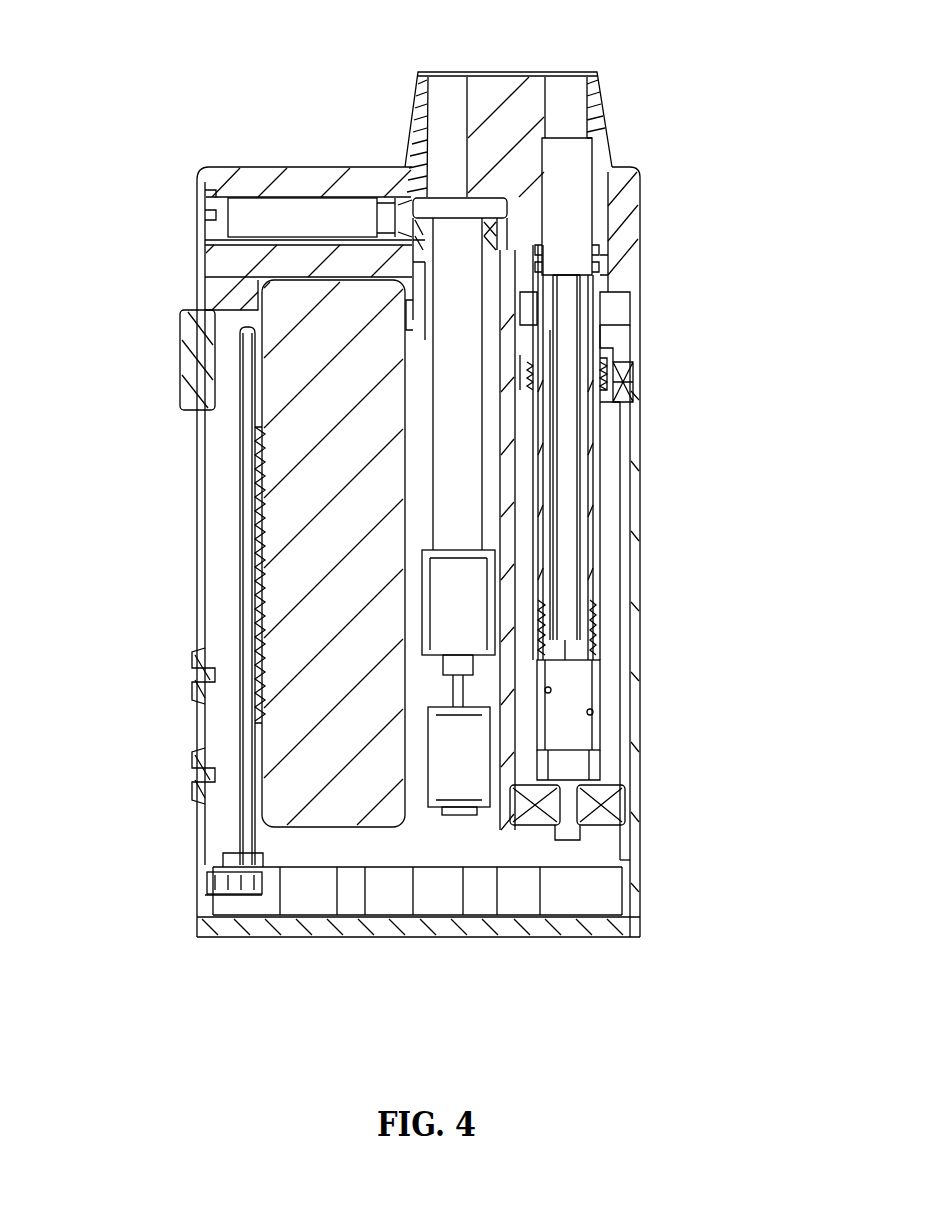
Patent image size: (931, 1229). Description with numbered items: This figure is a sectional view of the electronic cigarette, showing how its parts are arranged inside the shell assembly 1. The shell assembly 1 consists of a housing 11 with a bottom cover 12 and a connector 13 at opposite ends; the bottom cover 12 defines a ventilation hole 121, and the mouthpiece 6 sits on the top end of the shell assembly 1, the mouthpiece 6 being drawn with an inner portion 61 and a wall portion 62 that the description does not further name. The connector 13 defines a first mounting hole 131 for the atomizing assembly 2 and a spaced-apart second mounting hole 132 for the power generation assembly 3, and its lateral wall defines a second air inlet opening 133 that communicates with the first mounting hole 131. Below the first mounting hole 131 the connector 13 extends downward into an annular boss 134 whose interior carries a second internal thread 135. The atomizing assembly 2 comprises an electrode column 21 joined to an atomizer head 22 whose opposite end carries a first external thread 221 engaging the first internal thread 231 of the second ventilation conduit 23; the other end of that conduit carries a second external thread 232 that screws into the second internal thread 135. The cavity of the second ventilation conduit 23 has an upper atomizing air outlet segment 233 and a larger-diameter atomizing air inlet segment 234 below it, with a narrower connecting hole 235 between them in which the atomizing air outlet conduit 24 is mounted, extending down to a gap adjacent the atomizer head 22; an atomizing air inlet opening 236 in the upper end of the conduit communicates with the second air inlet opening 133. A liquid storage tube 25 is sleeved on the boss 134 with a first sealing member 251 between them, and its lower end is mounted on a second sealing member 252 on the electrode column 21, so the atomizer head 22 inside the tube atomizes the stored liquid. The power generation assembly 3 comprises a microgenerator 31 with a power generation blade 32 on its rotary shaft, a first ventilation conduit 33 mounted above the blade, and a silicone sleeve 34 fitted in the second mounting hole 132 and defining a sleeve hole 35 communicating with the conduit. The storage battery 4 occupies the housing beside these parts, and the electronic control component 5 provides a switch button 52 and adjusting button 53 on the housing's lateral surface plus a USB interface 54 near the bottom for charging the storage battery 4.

The shell assembly 1 is at (225, 280).
The housing 11 is at (200, 560).
The bottom cover 12 is at (352, 925).
The ventilation hole 121 is at (495, 925).
The connector 13 is at (335, 260).
The first mounting hole 131 is at (520, 245).
The second mounting hole 132 is at (405, 232).
The second air inlet opening 133 is at (625, 290).
The boss 134 is at (527, 375).
The second internal thread 135 is at (600, 400).
The atomizing assembly 2 is at (572, 728).
The electrode column 21 is at (600, 835).
The atomizer head 22 is at (582, 772).
The first external thread 221 is at (578, 688).
The second ventilation conduit 23 is at (595, 220).
The first internal thread 231 is at (593, 642).
The second external thread 232 is at (612, 385).
The atomizing air outlet segment 233 is at (575, 245).
The atomizing air inlet segment 234 is at (595, 603).
The connecting hole 235 is at (605, 265).
The atomizing air inlet opening 236 is at (612, 365).
The atomizing air outlet conduit 24 is at (612, 330).
The liquid storage tube 25 is at (622, 650).
The first sealing member 251 is at (262, 490).
The second sealing member 252 is at (605, 800).
The power generation assembly 3 is at (480, 785).
The microgenerator 31 is at (570, 830).
The power generation blade 32 is at (265, 810).
The first ventilation conduit 33 is at (240, 430).
The sleeve 34 is at (262, 342).
The sleeve hole 35 is at (450, 228).
The storage battery 4 is at (290, 575).
The electronic control component 5 is at (305, 865).
The switch button 52 is at (192, 318).
The adjusting button 53 is at (197, 752).
The USB interface 54 is at (218, 888).
The mouthpiece 6 is at (512, 105).
The cup channel 61 is at (565, 105).
The cup wall 62 is at (450, 105).